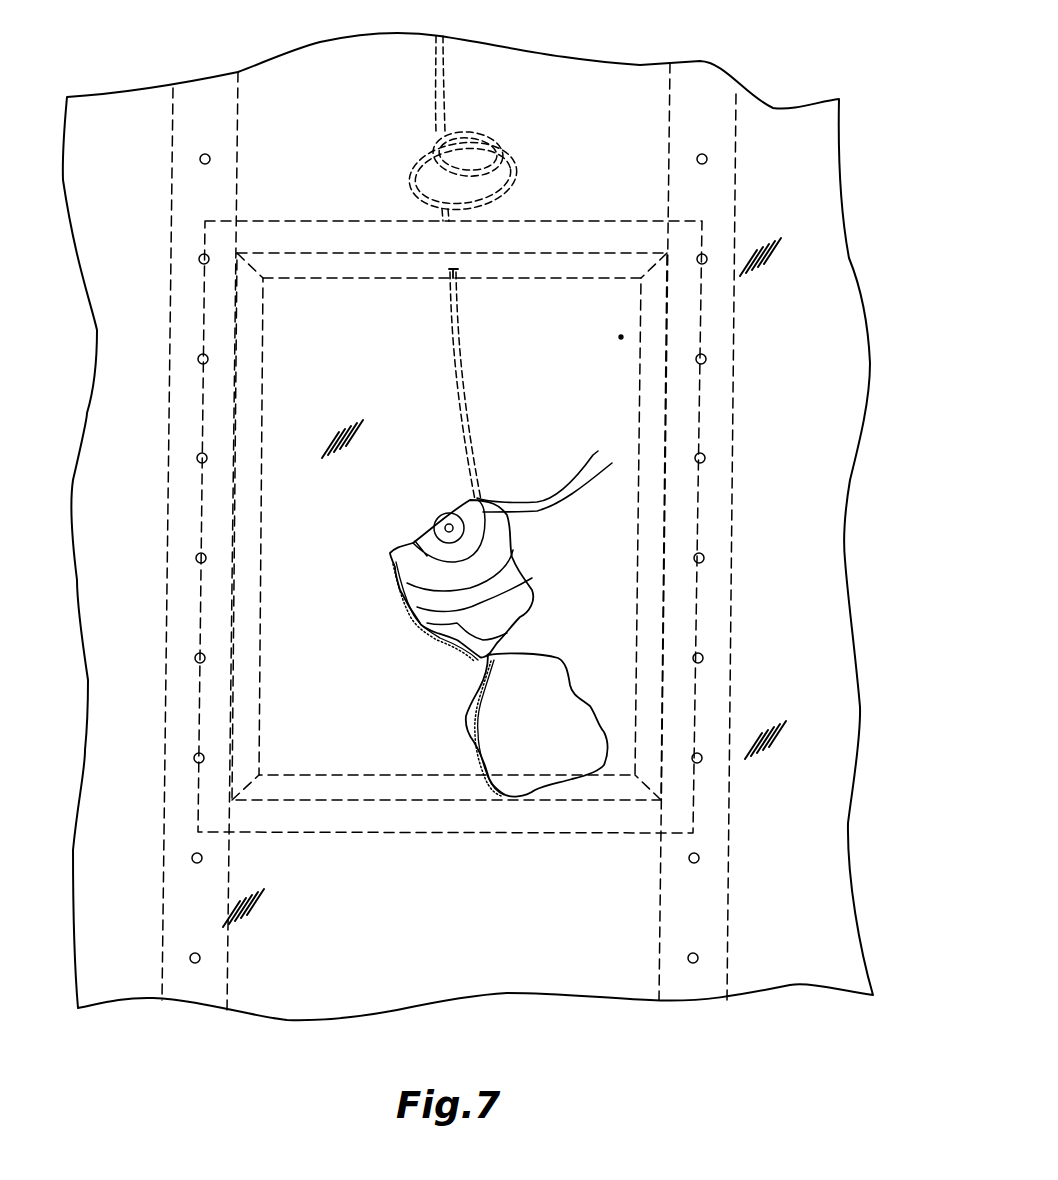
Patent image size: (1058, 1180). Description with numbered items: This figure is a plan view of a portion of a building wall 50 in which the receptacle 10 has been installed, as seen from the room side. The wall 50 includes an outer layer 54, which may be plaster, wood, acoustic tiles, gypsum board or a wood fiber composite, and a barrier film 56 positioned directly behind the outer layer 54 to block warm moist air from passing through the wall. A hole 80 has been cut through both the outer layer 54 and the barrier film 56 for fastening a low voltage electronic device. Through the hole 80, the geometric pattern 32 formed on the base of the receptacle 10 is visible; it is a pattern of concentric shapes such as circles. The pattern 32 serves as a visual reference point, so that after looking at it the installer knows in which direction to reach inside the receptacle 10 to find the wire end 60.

The building wall 50 is at (764, 74).
The outer layer 54 is at (828, 287).
The wire end 60 is at (595, 455).
The hole 80 is at (530, 583).
The geometric pattern 32 is at (495, 594).
The receptacle 10 is at (452, 552).
The barrier film 56 is at (453, 627).